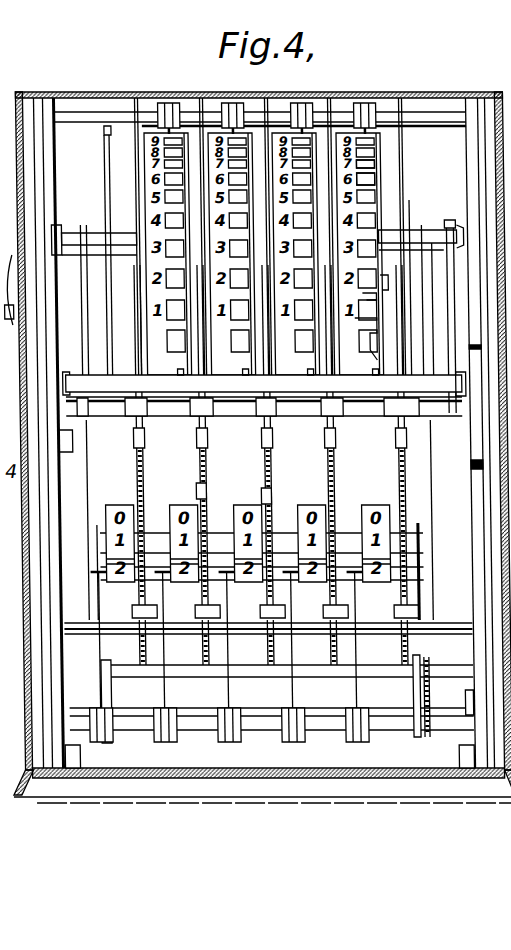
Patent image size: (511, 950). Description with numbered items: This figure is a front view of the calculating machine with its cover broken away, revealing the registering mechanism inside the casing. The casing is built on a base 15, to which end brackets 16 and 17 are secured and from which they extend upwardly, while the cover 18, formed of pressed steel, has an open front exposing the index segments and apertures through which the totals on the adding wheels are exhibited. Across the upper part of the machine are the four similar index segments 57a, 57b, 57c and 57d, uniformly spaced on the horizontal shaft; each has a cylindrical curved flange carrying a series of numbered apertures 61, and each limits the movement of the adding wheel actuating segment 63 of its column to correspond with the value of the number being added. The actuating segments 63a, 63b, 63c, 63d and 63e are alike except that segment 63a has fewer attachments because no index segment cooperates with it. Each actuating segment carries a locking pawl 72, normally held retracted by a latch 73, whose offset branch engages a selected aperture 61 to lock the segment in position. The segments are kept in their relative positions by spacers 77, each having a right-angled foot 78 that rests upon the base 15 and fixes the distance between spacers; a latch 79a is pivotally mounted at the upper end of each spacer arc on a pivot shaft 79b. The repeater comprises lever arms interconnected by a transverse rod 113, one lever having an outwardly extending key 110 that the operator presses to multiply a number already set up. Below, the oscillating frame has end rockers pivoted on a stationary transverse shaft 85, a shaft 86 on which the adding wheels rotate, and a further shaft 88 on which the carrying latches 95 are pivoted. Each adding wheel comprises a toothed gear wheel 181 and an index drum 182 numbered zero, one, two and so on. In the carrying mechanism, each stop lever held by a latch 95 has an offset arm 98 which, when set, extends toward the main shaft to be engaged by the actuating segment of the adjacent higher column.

The base 15 is at (240, 776).
The end bracket 16 is at (44, 528).
The end bracket 17 is at (464, 544).
The cover 18 is at (493, 210).
The index segment 57a is at (380, 213).
The index segment 57b is at (315, 202).
The index segment 57c is at (197, 210).
The index segment 57d is at (197, 187).
The apertures 61 is at (371, 173).
The actuating segment 63 is at (380, 281).
The actuating segment 63a is at (392, 461).
The actuating segment 63b is at (321, 462).
The actuating segment 63c is at (258, 466).
The actuating segment 63d is at (193, 466).
The actuating segment 63e is at (130, 466).
The locking pawl 72 is at (380, 288).
The latch 73 is at (368, 339).
The spacers 77 is at (141, 751).
The foot 78 is at (226, 768).
The latch 79a is at (368, 104).
The pivot shaft 79b is at (428, 112).
The stationary transverse shaft 85 is at (434, 700).
The shaft 86 is at (337, 540).
The shaft 88 is at (384, 722).
The latch 95 is at (284, 635).
The offset arm 98 is at (151, 620).
The key 110 is at (57, 432).
The transverse rod 113 is at (84, 381).
The toothed gear wheel 181 is at (199, 492).
The index drum 182 is at (264, 500).